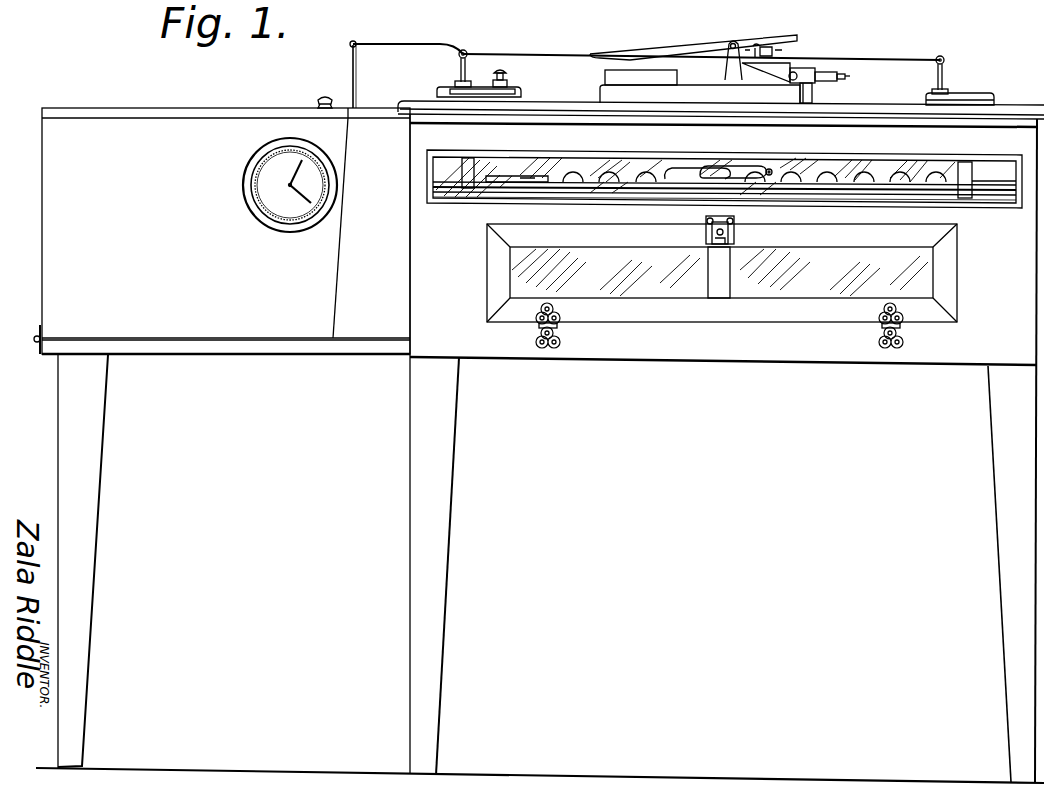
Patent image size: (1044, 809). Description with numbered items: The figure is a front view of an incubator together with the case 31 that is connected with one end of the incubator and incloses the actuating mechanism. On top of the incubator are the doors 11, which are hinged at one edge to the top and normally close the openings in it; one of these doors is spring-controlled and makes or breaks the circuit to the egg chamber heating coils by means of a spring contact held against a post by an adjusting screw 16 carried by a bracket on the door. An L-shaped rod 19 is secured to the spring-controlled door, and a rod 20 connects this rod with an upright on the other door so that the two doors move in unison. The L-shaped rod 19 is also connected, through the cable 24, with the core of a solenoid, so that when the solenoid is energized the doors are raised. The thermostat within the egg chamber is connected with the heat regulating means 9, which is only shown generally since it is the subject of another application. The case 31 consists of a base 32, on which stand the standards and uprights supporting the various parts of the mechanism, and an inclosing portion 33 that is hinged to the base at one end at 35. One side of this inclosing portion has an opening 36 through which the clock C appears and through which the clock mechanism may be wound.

The heat regulating means 9 is at (795, 68).
The doors 11 is at (524, 96).
The adjusting screw 16 is at (512, 81).
The L-shaped rod 19 is at (432, 43).
The rod 20 is at (576, 50).
The cable 24 is at (360, 80).
The case 31 is at (254, 228).
The base 32 is at (250, 350).
The inclosing portion 33 is at (46, 249).
The hinge 35 is at (34, 341).
The opening 36 is at (262, 216).
The clock C is at (257, 190).